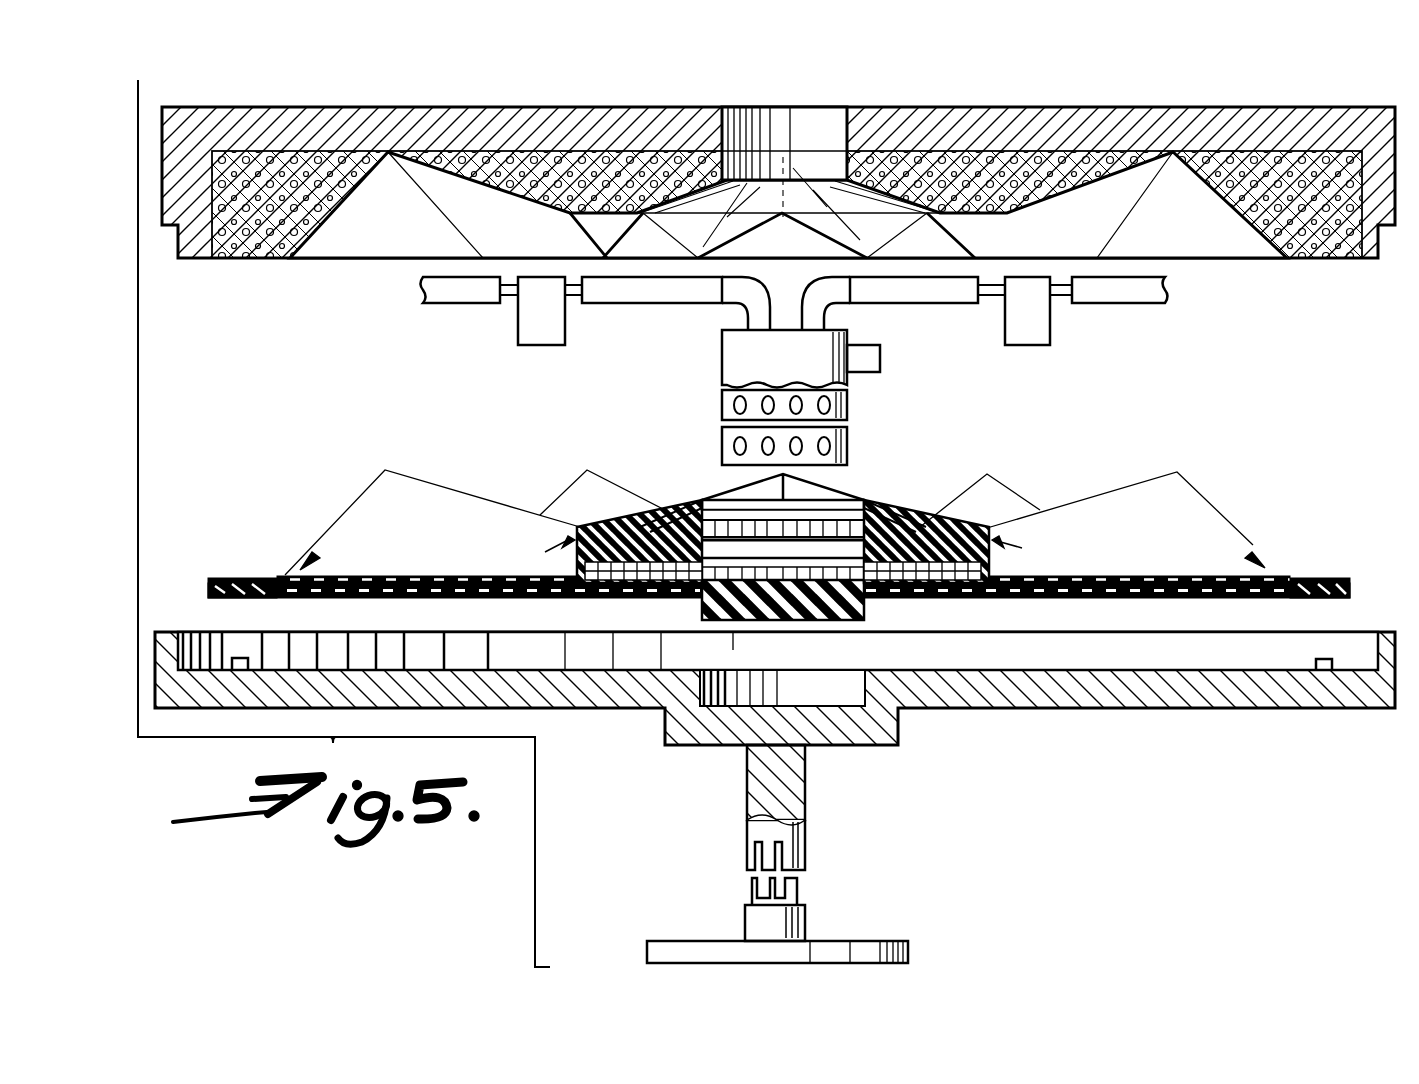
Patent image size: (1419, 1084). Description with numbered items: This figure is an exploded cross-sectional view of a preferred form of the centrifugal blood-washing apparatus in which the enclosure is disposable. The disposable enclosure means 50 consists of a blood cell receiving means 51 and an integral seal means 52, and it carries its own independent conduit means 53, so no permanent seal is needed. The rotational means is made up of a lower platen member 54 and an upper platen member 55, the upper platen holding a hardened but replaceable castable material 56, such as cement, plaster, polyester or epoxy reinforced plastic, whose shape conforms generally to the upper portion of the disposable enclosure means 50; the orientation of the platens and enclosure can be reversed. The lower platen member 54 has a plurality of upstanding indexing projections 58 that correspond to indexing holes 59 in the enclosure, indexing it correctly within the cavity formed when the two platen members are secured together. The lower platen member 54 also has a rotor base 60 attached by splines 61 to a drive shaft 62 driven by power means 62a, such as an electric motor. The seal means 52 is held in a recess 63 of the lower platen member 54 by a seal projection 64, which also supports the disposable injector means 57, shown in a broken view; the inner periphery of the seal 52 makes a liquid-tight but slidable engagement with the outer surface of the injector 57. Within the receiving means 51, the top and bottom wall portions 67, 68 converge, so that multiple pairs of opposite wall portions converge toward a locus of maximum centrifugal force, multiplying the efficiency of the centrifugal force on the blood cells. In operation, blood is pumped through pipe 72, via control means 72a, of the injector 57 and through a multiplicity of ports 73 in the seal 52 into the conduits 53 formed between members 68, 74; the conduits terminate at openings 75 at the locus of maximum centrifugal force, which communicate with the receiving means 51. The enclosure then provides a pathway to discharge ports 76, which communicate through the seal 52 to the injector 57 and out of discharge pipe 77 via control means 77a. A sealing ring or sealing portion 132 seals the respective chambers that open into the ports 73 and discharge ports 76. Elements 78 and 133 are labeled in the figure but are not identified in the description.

The disposable enclosure means 50 is at (485, 535).
The blood cell receiving means 51 is at (330, 533).
The integral seal means 52 is at (700, 496).
The conduit means 53 is at (465, 597).
The lower platen member 54 is at (775, 679).
The upper platen member 55 is at (778, 160).
The castable material 56 is at (1105, 107).
The injector means 57 is at (745, 358).
The indexing projections 58 is at (245, 655).
The indexing holes 59 is at (250, 578).
The rotor base 60 is at (805, 793).
The splines 61 is at (805, 832).
The drive shaft 62 is at (790, 940).
The power means 62a is at (908, 948).
The recess 63 is at (832, 663).
The seal projection 64 is at (866, 610).
The top wall portion 67 is at (362, 490).
The bottom wall portion 68 is at (388, 576).
The pipe 72 is at (835, 310).
The control means 72a is at (1045, 333).
The ports 73 is at (607, 585).
The member 74 is at (370, 595).
The openings 75 is at (285, 575).
The discharge ports 76 is at (1022, 532).
The discharge pipe 77 is at (745, 313).
The control means 77a is at (542, 350).
The lead 78 is at (440, 495).
The sealing ring or sealing portion 132 is at (712, 478).
The right cone 133 is at (880, 498).